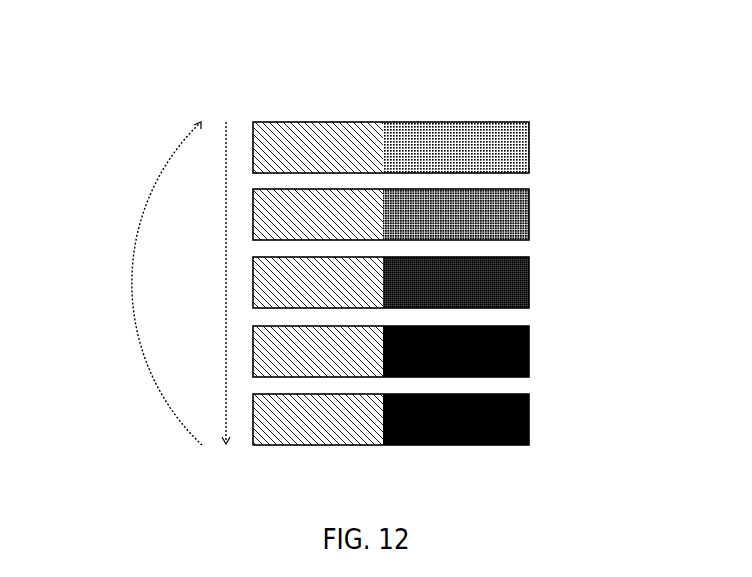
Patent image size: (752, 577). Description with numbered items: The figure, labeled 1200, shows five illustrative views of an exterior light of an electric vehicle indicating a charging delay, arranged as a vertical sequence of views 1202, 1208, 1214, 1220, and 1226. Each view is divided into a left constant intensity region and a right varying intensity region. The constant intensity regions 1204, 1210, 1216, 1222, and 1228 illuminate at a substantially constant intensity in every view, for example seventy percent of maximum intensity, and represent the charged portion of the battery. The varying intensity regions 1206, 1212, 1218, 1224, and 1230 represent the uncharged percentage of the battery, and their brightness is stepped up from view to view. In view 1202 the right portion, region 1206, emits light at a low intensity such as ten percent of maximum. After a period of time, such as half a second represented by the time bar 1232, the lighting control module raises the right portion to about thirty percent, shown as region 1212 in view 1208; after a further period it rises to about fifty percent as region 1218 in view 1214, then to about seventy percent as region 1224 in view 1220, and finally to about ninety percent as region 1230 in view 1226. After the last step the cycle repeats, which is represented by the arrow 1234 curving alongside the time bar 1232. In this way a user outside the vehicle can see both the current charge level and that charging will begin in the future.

The display brightness/darkness level diagram 1200 is at (397, 61).
The view 1202 is at (440, 136).
The constant intensity region 1204 is at (262, 129).
The varying intensity region 1206 is at (521, 158).
The view 1208 is at (440, 203).
The constant intensity region 1210 is at (262, 196).
The varying intensity region 1212 is at (521, 225).
The view 1214 is at (440, 271).
The constant intensity region 1216 is at (262, 264).
The varying intensity region 1218 is at (521, 293).
The view 1220 is at (440, 340).
The constant intensity region 1222 is at (262, 333).
The varying intensity region 1224 is at (521, 362).
The view 1226 is at (440, 408).
The constant intensity region 1228 is at (262, 401).
The varying intensity region 1230 is at (521, 430).
The time bar 1232 is at (225, 258).
The arrow 1234 is at (133, 250).